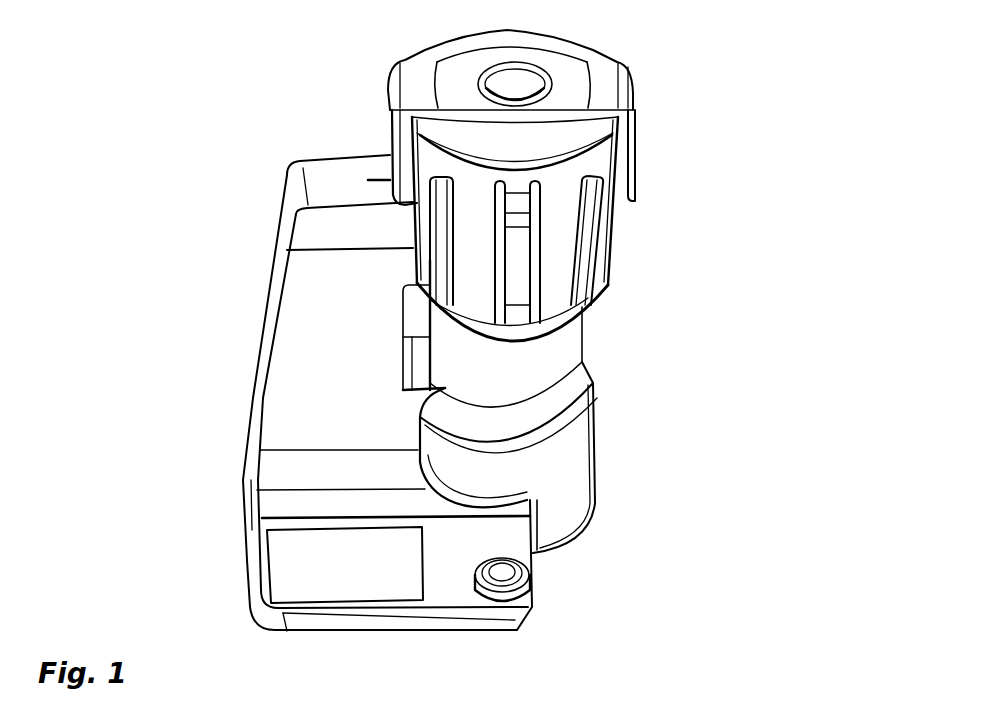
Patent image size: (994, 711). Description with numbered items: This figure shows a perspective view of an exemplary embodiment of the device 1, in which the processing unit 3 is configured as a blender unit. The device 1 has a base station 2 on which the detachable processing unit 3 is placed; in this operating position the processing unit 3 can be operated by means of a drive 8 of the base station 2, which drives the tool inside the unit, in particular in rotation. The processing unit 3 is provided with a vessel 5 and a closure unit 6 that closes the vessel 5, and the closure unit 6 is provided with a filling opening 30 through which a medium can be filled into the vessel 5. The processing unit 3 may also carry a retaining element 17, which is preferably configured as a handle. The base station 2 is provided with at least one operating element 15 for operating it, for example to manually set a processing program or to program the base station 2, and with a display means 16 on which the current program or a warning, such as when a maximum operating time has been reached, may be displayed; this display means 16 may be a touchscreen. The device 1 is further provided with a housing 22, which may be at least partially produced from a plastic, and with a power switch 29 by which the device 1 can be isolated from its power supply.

The device 1 is at (173, 187).
The base station 2 is at (263, 339).
The processing unit 3 is at (640, 130).
The vessel 5 is at (557, 207).
The closure unit 6 is at (445, 50).
The drive 8 is at (535, 468).
The operating element 15 is at (507, 575).
The display means 16 is at (290, 543).
The retaining element 17 is at (518, 268).
The housing 22 is at (300, 409).
The power switch 29 is at (245, 483).
The filling opening 30 is at (515, 88).